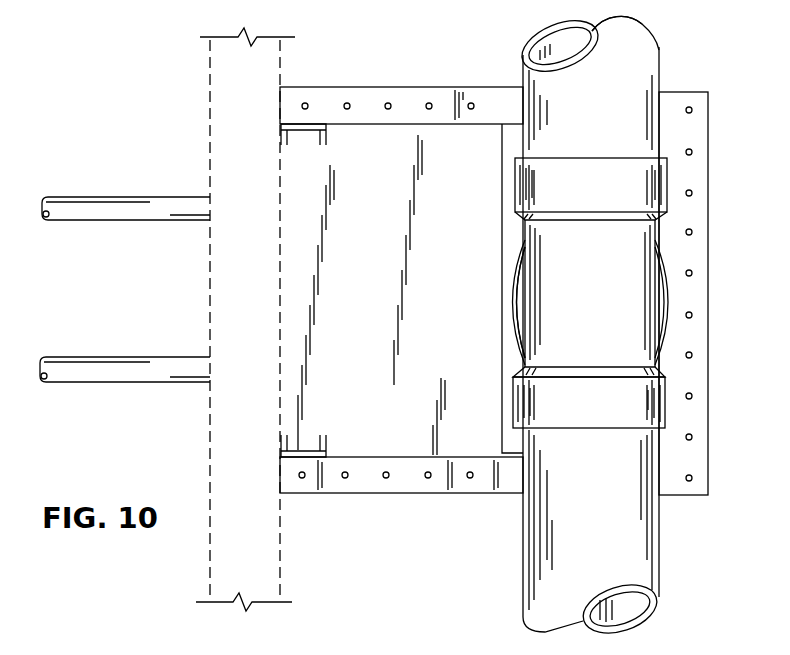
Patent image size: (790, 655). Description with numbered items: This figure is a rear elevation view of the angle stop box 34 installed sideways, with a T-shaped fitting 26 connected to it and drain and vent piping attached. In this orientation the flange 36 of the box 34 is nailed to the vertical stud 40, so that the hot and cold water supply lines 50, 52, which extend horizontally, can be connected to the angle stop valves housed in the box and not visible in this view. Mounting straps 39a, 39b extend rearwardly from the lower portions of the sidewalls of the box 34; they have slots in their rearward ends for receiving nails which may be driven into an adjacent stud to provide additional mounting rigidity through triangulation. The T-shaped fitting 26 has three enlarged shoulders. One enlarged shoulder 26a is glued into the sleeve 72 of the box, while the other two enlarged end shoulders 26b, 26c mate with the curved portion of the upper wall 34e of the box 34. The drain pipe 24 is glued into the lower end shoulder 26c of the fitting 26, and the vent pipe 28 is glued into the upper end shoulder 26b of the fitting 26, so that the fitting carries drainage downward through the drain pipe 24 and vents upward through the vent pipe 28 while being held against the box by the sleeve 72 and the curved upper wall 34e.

The drain pipe 24 is at (656, 543).
The T-shaped fitting 26 is at (604, 302).
The enlarged shoulder 26a is at (522, 291).
The enlarged end shoulder 26b is at (614, 197).
The enlarged end shoulder 26c is at (612, 415).
The vent pipe 28 is at (655, 48).
The box 34 is at (372, 304).
The upper wall 34e is at (512, 355).
The flange 36 is at (399, 87).
The mounting strap 39a is at (327, 136).
The mounting strap 39b is at (327, 445).
The vertical stud 40 is at (280, 533).
The hot water supply line 50 is at (130, 357).
The cold water supply line 52 is at (133, 197).
The sleeve 72 is at (520, 245).